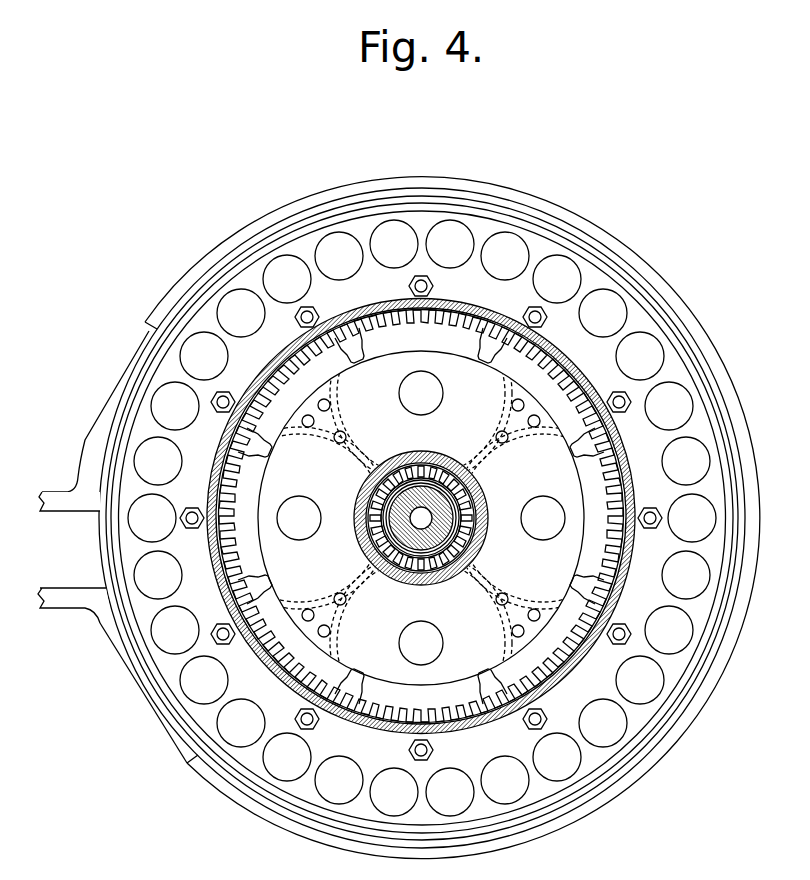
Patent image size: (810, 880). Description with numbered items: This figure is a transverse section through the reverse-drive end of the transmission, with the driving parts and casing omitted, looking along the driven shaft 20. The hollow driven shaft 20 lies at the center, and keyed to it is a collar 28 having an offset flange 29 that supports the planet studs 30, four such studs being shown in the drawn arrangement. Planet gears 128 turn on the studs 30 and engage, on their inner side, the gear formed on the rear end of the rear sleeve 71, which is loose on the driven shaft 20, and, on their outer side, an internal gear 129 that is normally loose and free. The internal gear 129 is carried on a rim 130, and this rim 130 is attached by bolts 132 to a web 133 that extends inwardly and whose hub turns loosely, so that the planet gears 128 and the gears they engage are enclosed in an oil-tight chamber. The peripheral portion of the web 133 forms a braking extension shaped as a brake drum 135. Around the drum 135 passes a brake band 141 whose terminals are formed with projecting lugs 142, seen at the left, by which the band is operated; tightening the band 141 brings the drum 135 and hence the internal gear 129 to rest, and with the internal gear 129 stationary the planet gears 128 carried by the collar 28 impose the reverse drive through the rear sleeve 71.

The driven shaft 20 is at (433, 548).
The collar 28 is at (421, 481).
The rear sleeve 71 is at (463, 524).
The planet studs 30 is at (421, 518).
The offset flange 29 is at (309, 414).
The planet gears 128 is at (258, 452).
The internal gear 129 is at (549, 364).
The rim 130 is at (508, 320).
The bolts 132 is at (545, 324).
The web 133 is at (588, 266).
The brake drum 135 is at (556, 238).
The brake band 141 is at (118, 405).
The lugs 142 is at (58, 492).